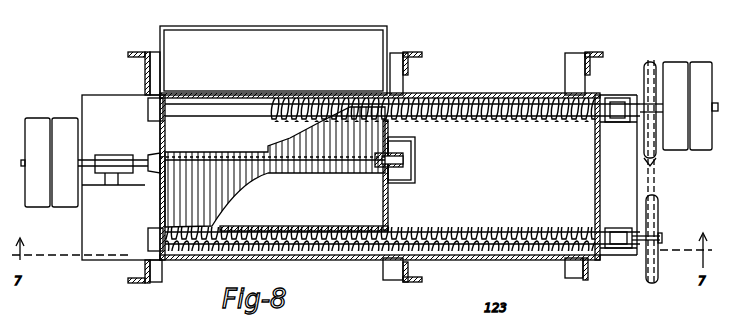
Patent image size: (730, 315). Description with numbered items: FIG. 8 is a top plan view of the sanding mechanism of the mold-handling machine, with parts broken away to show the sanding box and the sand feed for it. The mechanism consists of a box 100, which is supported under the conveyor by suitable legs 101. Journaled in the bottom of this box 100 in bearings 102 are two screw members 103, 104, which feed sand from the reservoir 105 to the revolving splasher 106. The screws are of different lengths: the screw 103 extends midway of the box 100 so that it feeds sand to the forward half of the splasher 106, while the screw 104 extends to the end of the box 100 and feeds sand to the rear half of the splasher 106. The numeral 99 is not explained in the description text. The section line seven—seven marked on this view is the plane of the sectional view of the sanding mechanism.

The housing chamber 99 is at (380, 176).
The box 100 is at (250, 95).
The legs 101 is at (155, 65).
The bearings 102 is at (150, 110).
The screw member 103 is at (517, 117).
The screw member 104 is at (508, 236).
The reservoir 105 is at (435, 161).
The revolving splasher 106 is at (222, 165).